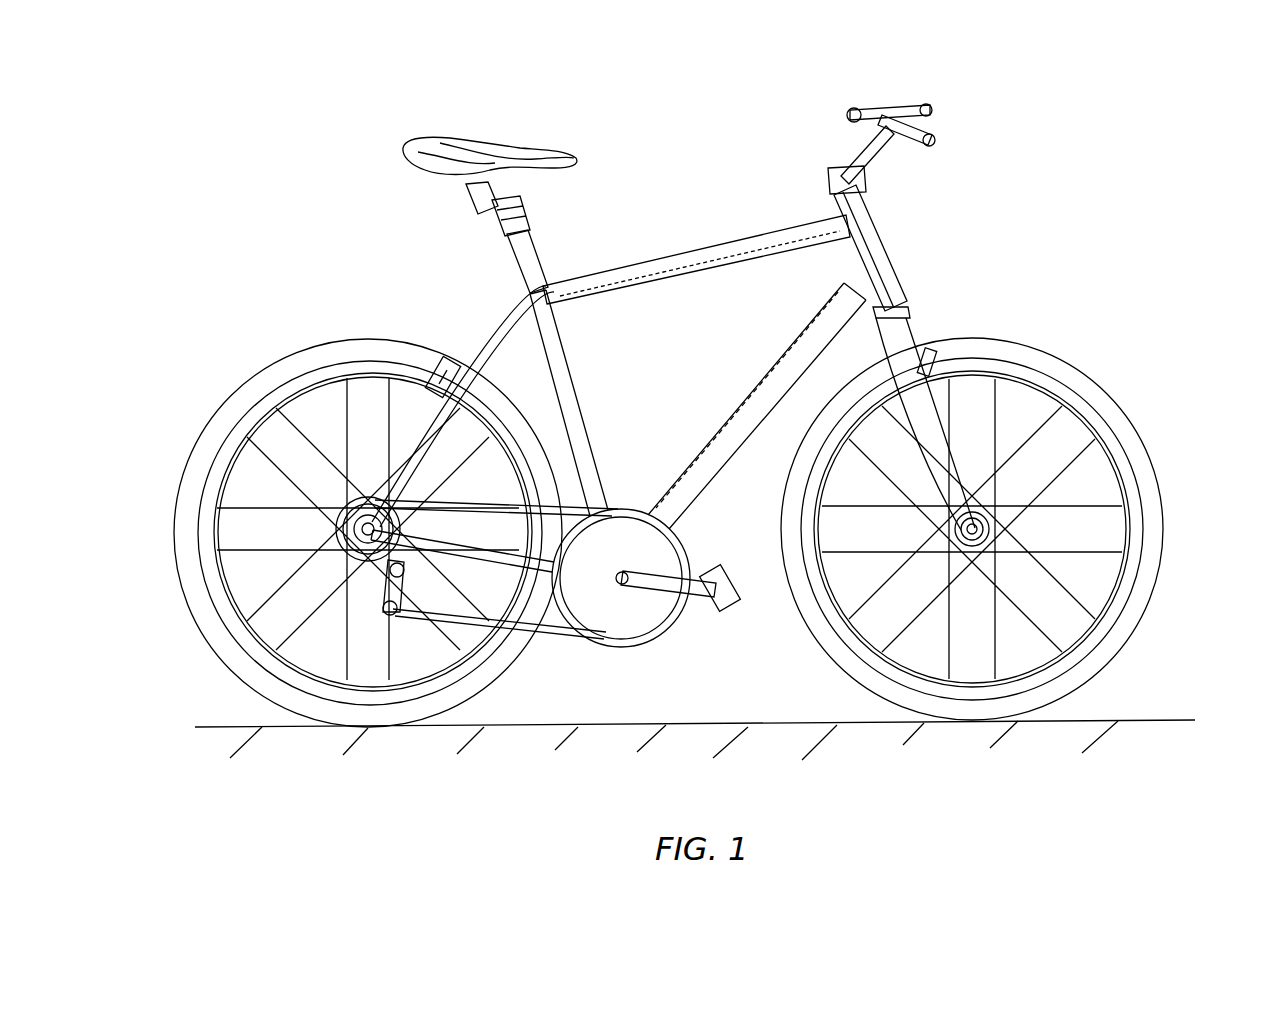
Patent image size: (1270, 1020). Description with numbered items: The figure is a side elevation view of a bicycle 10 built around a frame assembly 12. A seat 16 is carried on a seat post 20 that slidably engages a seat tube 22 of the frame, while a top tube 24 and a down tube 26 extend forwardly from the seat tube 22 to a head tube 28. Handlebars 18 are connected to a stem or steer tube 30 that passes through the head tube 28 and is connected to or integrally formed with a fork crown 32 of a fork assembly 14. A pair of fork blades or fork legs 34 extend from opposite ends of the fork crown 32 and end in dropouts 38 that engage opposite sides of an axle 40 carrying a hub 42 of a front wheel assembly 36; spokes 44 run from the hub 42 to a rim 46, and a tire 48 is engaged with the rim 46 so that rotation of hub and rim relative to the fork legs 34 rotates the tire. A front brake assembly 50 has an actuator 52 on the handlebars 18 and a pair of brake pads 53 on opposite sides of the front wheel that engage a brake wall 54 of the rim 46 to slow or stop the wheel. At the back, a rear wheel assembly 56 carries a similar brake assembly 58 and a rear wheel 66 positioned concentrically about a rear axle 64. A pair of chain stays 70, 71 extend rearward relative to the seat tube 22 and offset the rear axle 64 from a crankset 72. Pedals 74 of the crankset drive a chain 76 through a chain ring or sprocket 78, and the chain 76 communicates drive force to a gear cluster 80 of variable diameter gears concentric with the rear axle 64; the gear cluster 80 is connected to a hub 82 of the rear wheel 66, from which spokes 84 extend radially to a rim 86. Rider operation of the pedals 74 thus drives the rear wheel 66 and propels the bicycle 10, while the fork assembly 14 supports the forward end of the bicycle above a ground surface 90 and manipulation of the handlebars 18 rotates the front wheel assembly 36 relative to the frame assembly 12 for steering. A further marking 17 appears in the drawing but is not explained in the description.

The bicycle 10 is at (872, 14).
The frame assembly 12 is at (654, 376).
The fork assembly 14 is at (937, 374).
The seat 16 is at (522, 140).
The sensor 17 is at (1190, 421).
The handlebars 18 is at (915, 97).
The seat post 20 is at (480, 210).
The seat tube 22 is at (522, 240).
The top tube 24 is at (702, 268).
The down tube 26 is at (775, 382).
The head tube 28 is at (866, 242).
The stem or steer tube 30 is at (858, 187).
The fork crown 32 is at (915, 320).
The fork blades or fork legs 34 is at (928, 418).
The front wheel assembly 36 is at (1006, 502).
The dropout 38 is at (988, 528).
The axle 40 is at (974, 574).
The hub 42 is at (956, 528).
The spokes 44 is at (1082, 602).
The rim 46 is at (1150, 515).
The tire 48 is at (478, 362).
The front brake assembly 50 is at (938, 352).
The actuator 52 is at (928, 108).
The brake pads 53 is at (990, 347).
The brake wall 54 is at (1045, 377).
The rear wheel assembly 56 is at (346, 509).
The brake assembly 58 is at (459, 343).
The rear axle 64 is at (356, 510).
The rear wheel 66 is at (245, 428).
The chain stay 70 is at (482, 556).
The chain stay 71 is at (474, 526).
The crankset 72 is at (642, 497).
The pedals 74 is at (724, 568).
The chain 76 is at (560, 640).
The chain ring or sprocket 78 is at (645, 622).
The gear cluster 80 is at (336, 524).
The hub 82 is at (345, 552).
The spokes 84 is at (265, 594).
The rim 86 is at (232, 455).
The ground surface 90 is at (1175, 718).